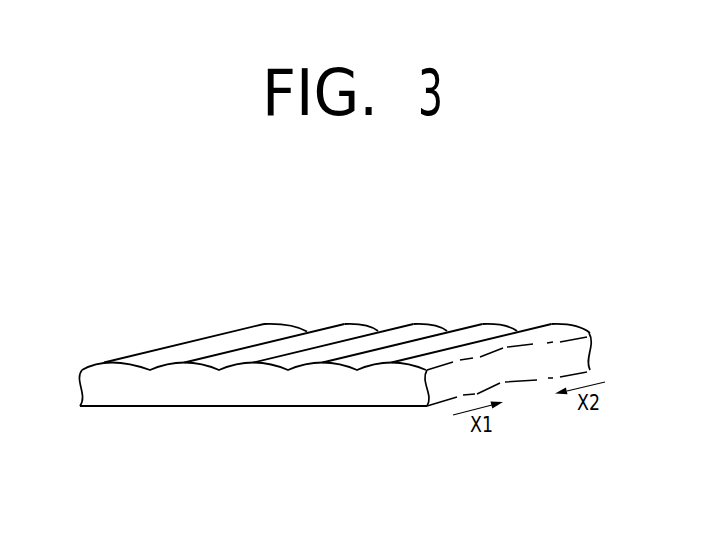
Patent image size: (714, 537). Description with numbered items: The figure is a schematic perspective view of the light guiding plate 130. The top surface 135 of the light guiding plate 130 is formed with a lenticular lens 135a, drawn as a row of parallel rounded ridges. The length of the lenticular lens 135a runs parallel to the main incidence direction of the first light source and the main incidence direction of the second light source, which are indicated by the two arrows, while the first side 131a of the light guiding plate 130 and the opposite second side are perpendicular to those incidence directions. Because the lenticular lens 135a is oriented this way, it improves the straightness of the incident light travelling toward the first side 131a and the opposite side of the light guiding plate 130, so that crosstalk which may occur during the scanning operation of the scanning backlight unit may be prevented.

The light guiding plate 130 is at (313, 367).
The top surface 135 is at (217, 343).
The lenticular lens 135a is at (384, 313).
The first side 131a is at (245, 388).